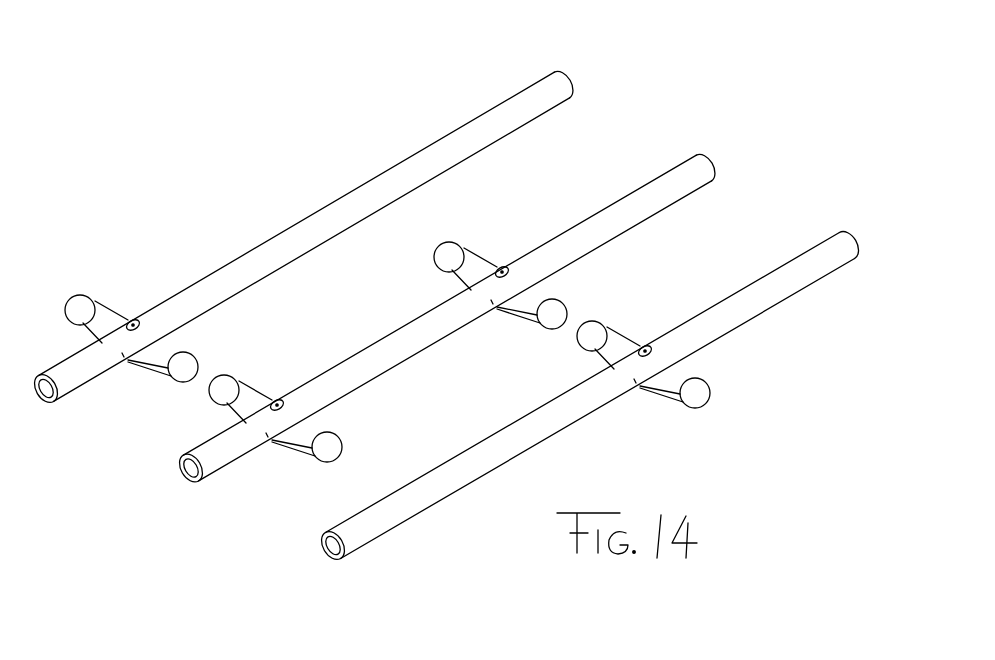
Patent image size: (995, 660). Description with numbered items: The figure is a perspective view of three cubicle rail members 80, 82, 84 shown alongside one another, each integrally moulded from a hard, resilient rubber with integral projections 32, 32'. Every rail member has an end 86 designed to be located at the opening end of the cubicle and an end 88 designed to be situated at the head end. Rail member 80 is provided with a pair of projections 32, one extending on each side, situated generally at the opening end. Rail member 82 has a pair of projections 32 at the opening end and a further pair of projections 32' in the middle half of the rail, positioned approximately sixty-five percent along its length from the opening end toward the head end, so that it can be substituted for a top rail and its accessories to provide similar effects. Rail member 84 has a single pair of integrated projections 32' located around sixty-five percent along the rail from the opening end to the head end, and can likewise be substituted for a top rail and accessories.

The projection 32 is at (218, 363).
The projection 32' is at (594, 305).
The cubicle rail member 80 is at (262, 257).
The cubicle rail member 82 is at (380, 347).
The cubicle rail member 84 is at (500, 440).
The end 86 is at (48, 399).
The end 88 is at (563, 90).